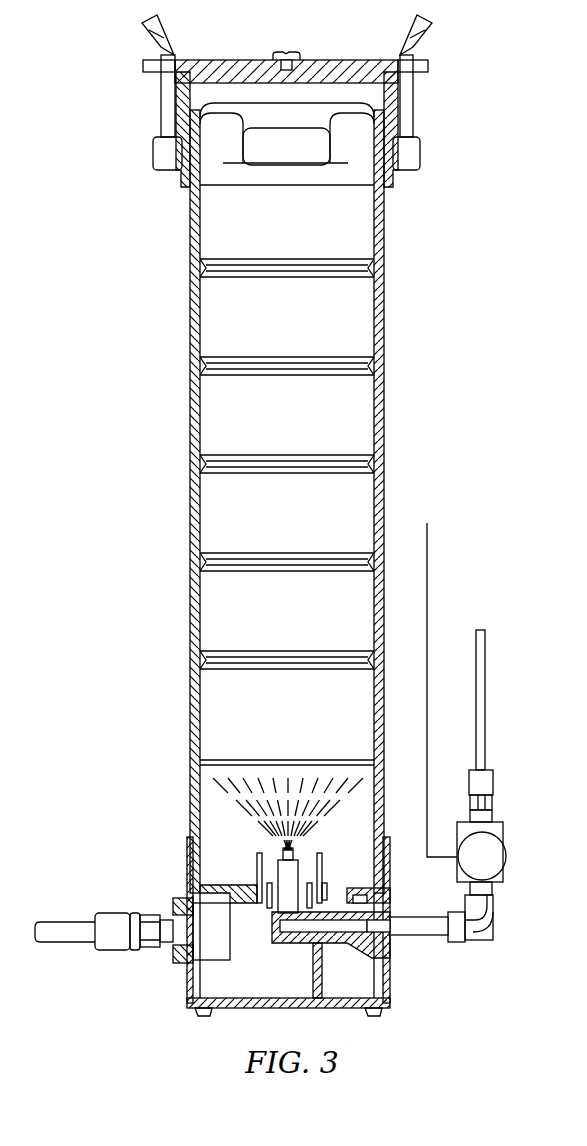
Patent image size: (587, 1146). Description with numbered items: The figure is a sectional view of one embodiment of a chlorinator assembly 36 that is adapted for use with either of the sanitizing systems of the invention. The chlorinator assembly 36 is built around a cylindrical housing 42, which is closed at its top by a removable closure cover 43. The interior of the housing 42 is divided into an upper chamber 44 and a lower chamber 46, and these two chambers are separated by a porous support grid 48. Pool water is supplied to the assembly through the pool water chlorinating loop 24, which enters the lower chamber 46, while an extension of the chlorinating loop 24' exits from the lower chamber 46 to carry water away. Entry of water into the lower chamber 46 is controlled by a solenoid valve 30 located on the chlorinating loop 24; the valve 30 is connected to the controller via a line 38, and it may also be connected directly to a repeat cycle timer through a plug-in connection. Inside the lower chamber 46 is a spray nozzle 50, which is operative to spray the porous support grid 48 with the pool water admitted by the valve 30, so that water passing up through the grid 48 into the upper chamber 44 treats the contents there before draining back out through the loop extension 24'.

The pool water chlorinating loop 24 is at (454, 812).
The extension of the chlorinating loop 24' is at (104, 908).
The solenoid valve 30 is at (495, 865).
The chlorinator assembly 36 is at (290, 563).
The line 38 is at (427, 558).
The cylindrical housing 42 is at (180, 448).
The removable closure cover 43 is at (213, 157).
The upper chamber 44 is at (276, 337).
The lower chamber 46 is at (226, 832).
The porous support grid 48 is at (316, 762).
The spray nozzle 50 is at (283, 866).